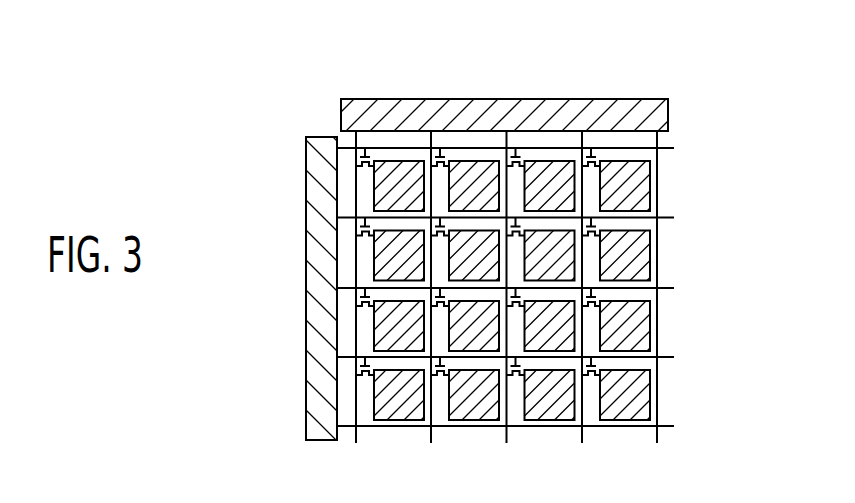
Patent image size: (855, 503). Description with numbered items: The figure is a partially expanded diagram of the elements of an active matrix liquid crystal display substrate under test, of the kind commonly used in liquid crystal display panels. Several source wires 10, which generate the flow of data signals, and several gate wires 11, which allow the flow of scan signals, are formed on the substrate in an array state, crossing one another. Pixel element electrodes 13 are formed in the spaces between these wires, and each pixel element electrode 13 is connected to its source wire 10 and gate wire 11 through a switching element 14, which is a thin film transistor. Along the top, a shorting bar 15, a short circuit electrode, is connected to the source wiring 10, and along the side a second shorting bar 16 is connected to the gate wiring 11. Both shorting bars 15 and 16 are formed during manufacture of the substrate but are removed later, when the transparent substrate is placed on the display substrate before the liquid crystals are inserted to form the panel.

The source wires 10 is at (658, 187).
The gate wires 11 is at (665, 218).
The pixel element electrodes 13 is at (650, 253).
The switching element 14 is at (598, 152).
The shorting bar 15 is at (520, 100).
The shorting bar 16 is at (312, 275).